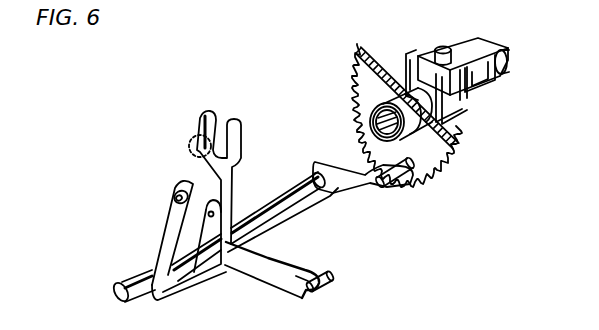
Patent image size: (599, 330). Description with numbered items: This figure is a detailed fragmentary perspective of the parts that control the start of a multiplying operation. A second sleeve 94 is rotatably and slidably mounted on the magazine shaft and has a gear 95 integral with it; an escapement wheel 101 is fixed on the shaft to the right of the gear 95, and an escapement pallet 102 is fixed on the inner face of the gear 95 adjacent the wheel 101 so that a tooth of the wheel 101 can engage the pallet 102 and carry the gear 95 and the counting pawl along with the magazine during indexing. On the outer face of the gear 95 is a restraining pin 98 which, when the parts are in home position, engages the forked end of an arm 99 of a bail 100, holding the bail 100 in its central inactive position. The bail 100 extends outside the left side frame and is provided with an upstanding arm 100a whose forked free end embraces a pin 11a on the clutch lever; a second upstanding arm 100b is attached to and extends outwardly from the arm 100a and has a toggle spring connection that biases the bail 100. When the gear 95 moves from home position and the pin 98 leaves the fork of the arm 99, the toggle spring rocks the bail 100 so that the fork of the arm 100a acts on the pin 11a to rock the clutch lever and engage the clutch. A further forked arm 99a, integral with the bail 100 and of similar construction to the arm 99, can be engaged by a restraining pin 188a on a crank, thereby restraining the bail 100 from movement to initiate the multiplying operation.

The pin 11a is at (193, 142).
The second sleeve 94 is at (376, 128).
The gear 95 is at (363, 62).
The restraining pin 98 is at (407, 186).
The arm 99 is at (362, 186).
The arm 99a is at (268, 276).
The bail 100 is at (307, 210).
The upstanding arm 100a is at (229, 180).
The second upstanding arm 100b is at (153, 250).
The escapement wheel 101 is at (455, 117).
The escapement pallet 102 is at (425, 55).
The restraining pin 188a is at (333, 283).